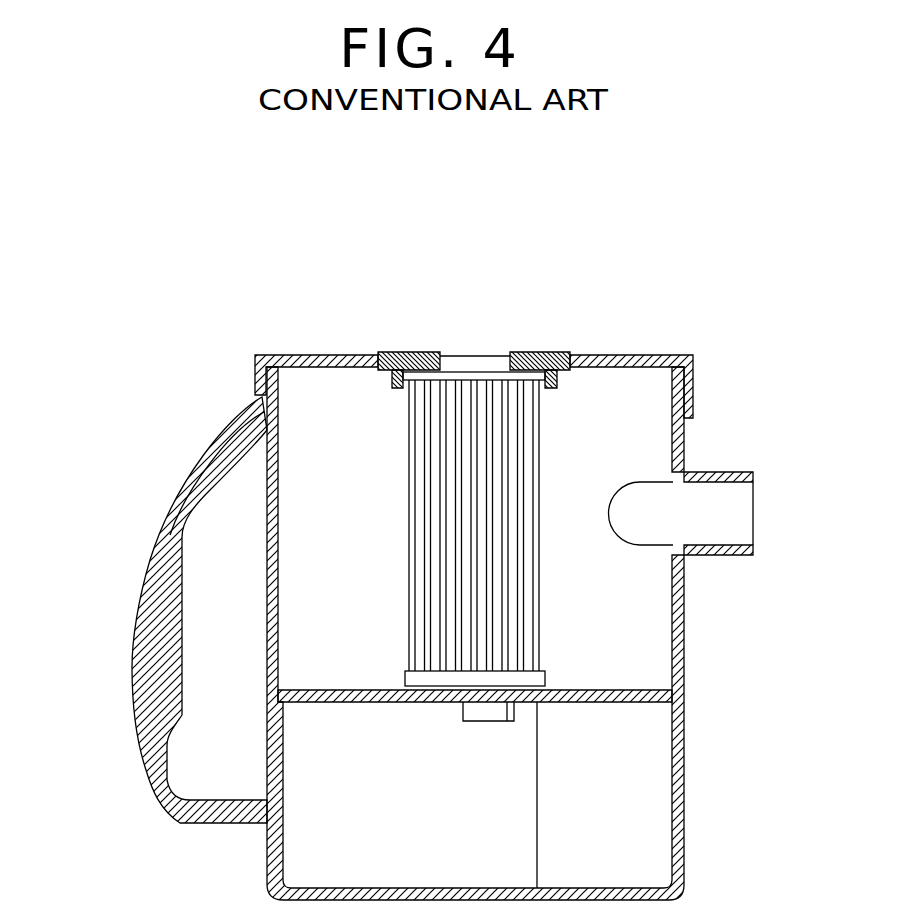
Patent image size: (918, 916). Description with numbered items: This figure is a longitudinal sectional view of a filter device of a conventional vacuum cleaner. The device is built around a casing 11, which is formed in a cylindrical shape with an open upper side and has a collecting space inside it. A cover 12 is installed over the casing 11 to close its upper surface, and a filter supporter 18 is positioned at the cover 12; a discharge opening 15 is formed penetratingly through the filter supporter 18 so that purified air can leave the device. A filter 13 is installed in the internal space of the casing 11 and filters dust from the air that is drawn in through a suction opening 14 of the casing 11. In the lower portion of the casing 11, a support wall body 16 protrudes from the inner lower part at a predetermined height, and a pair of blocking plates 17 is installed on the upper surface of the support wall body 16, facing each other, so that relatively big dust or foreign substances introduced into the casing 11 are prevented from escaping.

The casing 11 is at (685, 442).
The cover 12 is at (322, 358).
The filter 13 is at (503, 415).
The suction opening 14 is at (740, 515).
The discharge opening 15 is at (458, 368).
The support wall body 16 is at (510, 793).
The blocking plates 17 is at (603, 702).
The filter supporter 18 is at (150, 620).